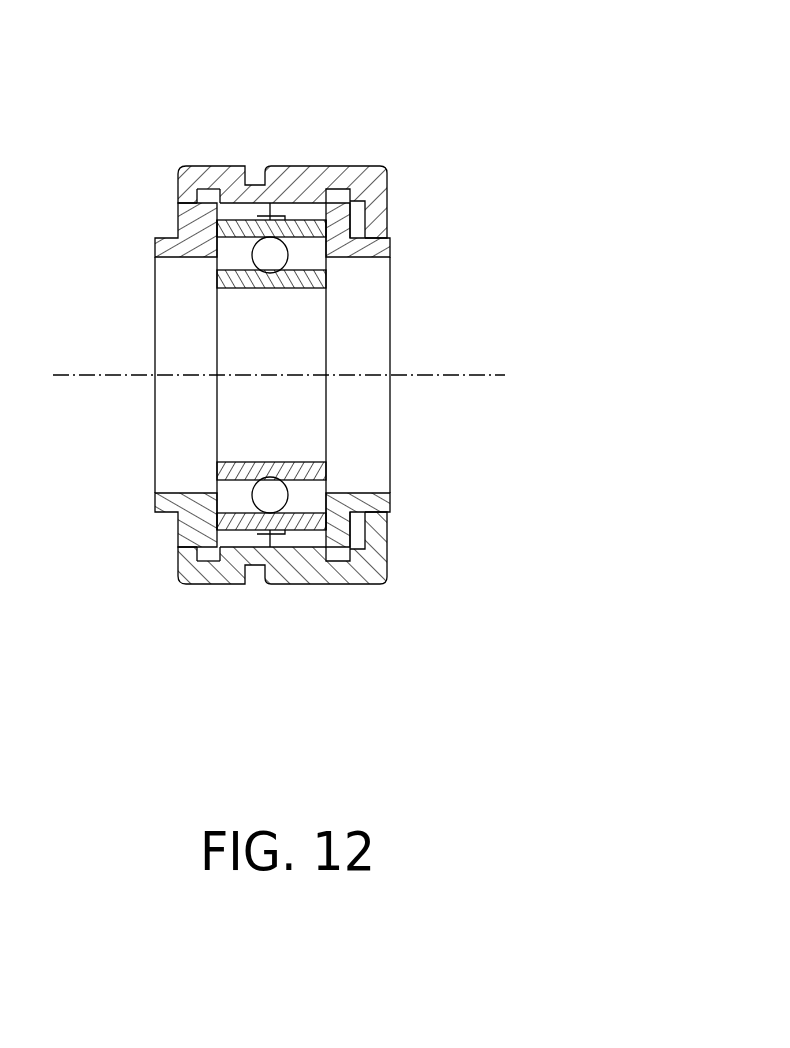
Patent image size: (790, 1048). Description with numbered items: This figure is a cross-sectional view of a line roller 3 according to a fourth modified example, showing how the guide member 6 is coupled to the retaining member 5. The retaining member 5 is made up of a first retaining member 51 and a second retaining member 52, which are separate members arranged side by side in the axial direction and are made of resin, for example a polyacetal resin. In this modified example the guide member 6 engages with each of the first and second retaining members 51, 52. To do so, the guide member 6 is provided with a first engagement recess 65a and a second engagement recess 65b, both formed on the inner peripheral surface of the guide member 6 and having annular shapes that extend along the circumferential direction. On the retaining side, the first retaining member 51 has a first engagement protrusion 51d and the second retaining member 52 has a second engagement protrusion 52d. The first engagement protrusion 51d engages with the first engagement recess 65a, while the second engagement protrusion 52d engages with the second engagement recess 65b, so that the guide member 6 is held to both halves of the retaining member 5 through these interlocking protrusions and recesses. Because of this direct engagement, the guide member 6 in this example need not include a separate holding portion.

The line roller 3 is at (402, 110).
The retaining member 5 is at (402, 250).
The guide member 6 is at (400, 175).
The first retaining member 51 is at (236, 557).
The second retaining member 52 is at (313, 557).
The first engagement protrusion 51d is at (196, 201).
The second engagement protrusion 52d is at (349, 200).
The first engagement recess 65a is at (197, 189).
The second engagement recess 65b is at (318, 192).